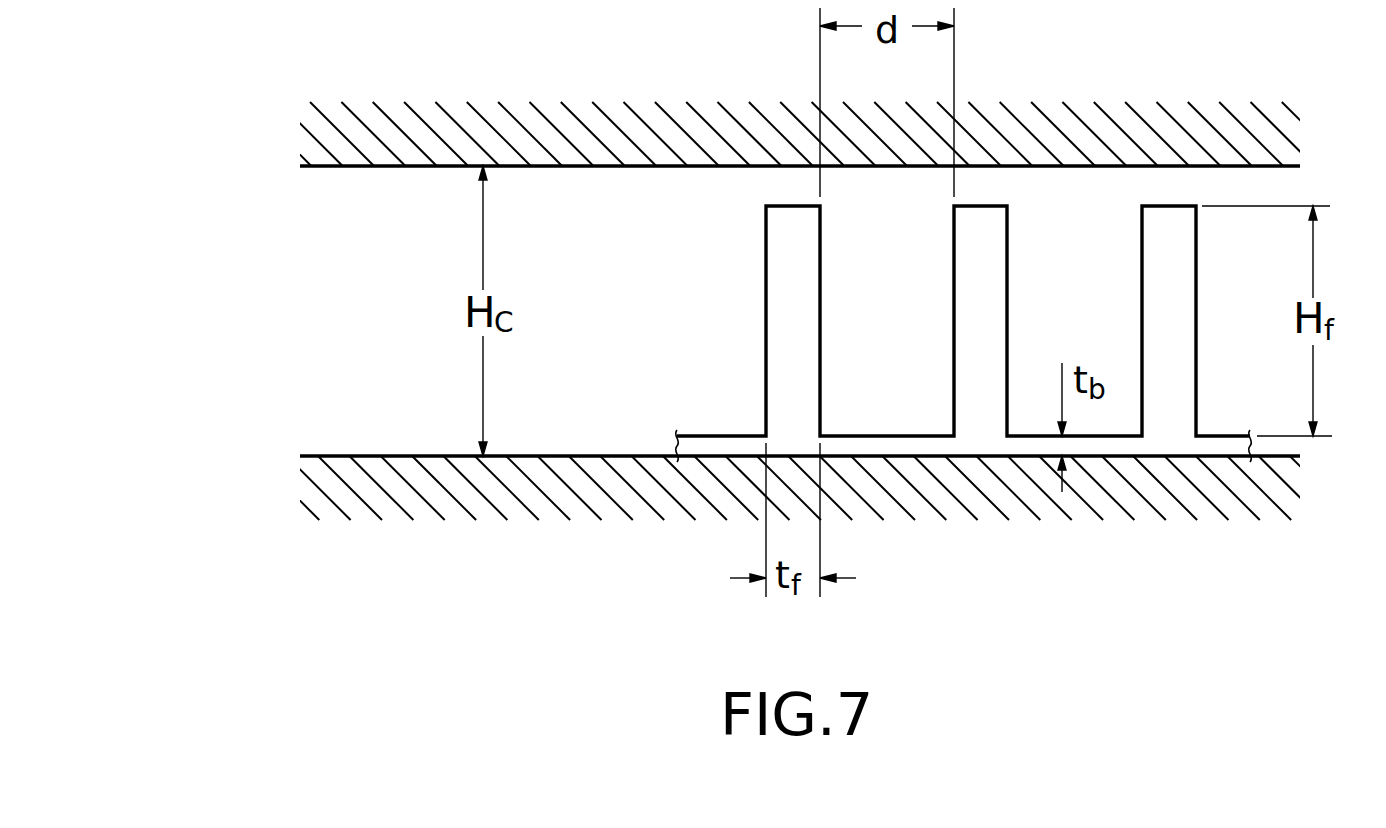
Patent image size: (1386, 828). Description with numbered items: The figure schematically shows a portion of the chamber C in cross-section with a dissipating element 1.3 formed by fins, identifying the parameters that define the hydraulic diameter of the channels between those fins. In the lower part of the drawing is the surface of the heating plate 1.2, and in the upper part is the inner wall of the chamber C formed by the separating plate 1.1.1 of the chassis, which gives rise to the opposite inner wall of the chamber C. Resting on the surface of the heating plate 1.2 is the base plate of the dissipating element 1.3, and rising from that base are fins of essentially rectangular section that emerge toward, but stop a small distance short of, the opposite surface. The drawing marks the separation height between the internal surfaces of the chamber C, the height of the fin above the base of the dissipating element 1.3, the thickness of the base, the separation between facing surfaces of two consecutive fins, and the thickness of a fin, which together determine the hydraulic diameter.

The separating plate 1.1.1 is at (325, 166).
The heating plate 1.2 is at (312, 456).
The dissipating element 1.3 is at (750, 371).
The chamber C is at (538, 200).